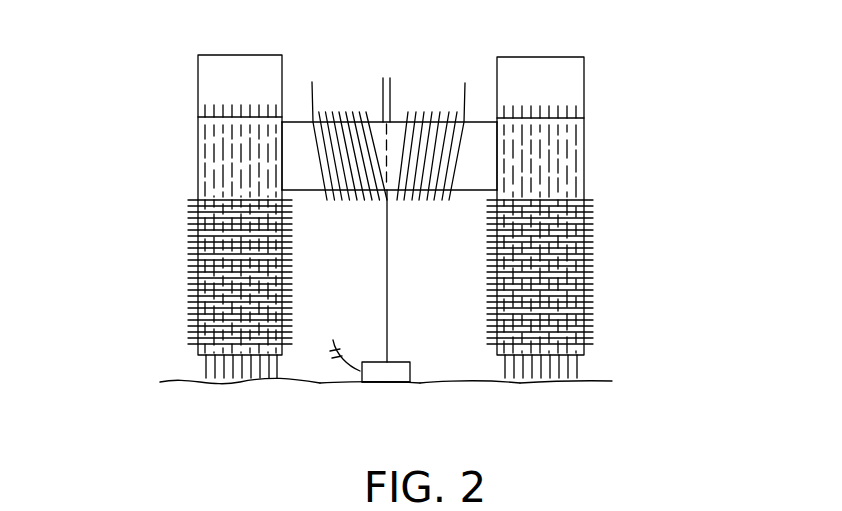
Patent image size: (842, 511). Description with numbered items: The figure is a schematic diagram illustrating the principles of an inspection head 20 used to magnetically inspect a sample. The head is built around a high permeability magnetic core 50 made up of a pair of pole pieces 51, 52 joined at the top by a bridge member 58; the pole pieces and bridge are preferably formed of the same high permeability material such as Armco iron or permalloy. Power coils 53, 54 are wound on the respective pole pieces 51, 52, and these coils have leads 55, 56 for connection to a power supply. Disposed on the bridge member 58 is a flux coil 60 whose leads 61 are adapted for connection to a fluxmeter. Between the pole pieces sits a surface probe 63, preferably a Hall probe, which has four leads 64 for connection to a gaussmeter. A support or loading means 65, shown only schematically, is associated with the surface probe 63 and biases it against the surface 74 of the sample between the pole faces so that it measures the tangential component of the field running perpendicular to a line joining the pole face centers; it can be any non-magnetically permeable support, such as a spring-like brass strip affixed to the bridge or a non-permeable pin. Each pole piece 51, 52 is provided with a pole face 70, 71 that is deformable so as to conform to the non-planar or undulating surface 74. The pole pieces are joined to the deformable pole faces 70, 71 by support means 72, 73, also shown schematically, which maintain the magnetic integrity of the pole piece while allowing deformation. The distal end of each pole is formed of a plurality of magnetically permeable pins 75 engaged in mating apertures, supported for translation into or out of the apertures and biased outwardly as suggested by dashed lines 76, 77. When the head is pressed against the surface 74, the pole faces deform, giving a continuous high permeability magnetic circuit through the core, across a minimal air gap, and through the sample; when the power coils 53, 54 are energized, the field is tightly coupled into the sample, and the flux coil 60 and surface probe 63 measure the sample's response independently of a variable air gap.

The inspection head 20 is at (112, 80).
The high permeability magnetic core 50 is at (586, 81).
The pole piece 51 is at (200, 262).
The pole piece 52 is at (586, 261).
The power coil 53 is at (284, 266).
The power coil 54 is at (495, 262).
The lead 55 is at (196, 198).
The lead 56 is at (586, 201).
The bridge member 58 is at (480, 121).
The flux coil 60 is at (343, 112).
The leads 61 is at (312, 84).
The surface probe 63 is at (402, 361).
The leads 64 is at (338, 340).
The support or loading means 65 is at (398, 233).
The pole face 70 is at (243, 379).
The pole face 71 is at (545, 383).
The support means 72 is at (305, 368).
The support means 73 is at (445, 383).
The surface 74 is at (412, 381).
The magnetically permeable pins 75 is at (196, 370).
The dashed lines 76 is at (200, 140).
The dashed lines 77 is at (586, 144).